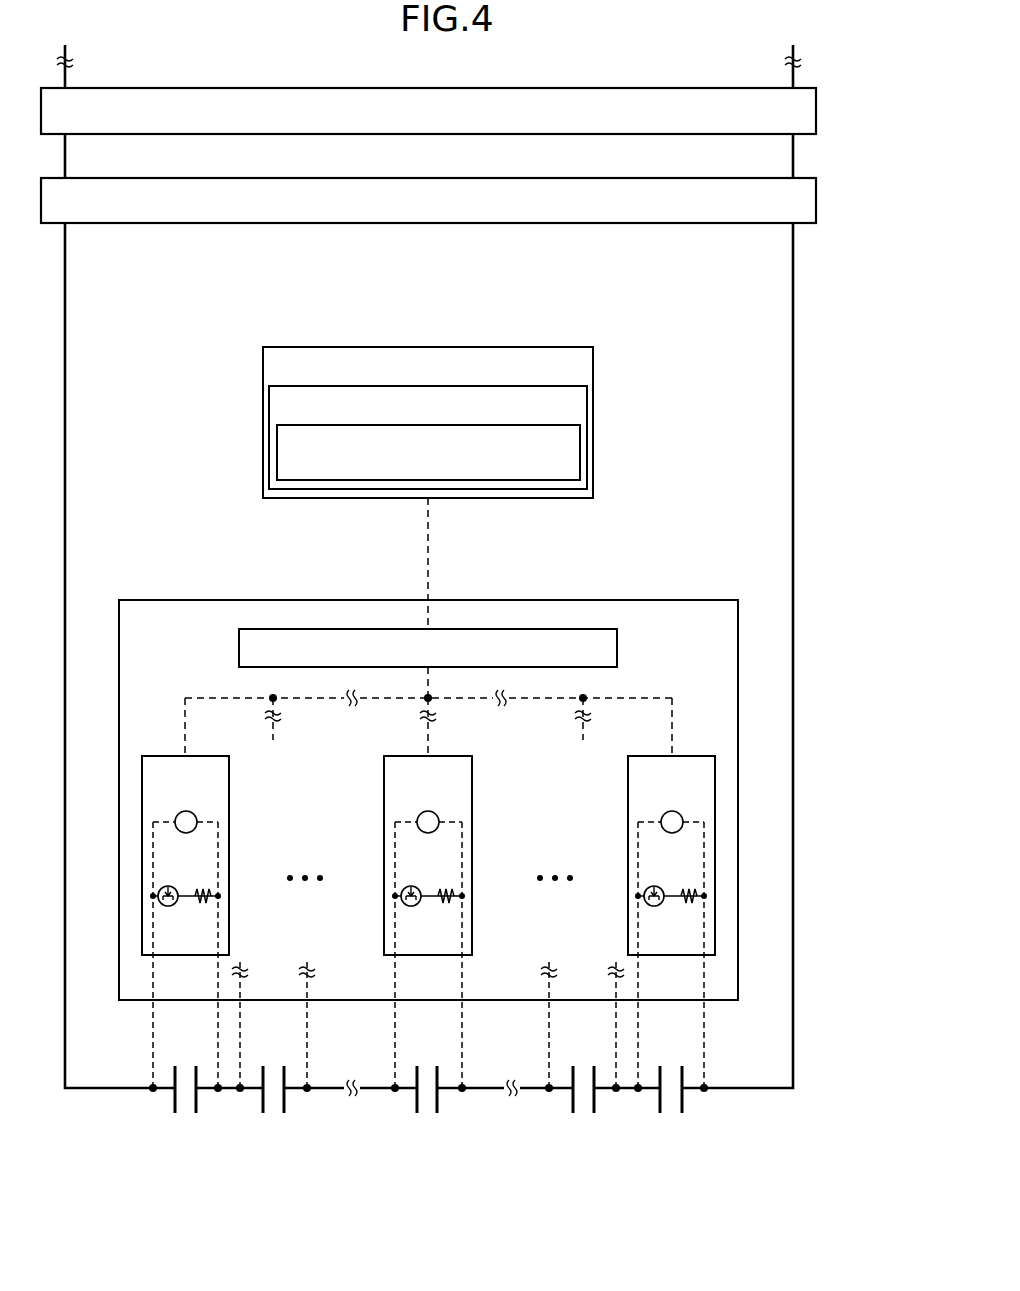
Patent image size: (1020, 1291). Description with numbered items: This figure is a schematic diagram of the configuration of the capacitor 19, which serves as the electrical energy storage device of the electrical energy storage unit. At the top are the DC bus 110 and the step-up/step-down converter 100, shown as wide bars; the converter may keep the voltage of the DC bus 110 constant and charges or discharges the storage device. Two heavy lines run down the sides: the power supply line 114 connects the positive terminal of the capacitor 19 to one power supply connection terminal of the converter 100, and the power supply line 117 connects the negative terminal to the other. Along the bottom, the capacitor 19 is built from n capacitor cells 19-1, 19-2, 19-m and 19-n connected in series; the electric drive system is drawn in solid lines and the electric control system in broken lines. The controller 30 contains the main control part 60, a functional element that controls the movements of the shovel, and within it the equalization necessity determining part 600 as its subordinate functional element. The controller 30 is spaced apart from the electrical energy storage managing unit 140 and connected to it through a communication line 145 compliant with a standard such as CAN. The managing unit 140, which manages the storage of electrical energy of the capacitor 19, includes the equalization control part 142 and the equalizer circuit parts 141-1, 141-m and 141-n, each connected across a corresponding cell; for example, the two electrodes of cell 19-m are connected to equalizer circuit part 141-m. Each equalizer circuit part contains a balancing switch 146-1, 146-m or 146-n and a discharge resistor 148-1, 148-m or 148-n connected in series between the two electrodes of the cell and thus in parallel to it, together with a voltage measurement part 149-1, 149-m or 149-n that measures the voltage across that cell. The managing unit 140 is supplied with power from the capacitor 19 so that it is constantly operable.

The DC bus 110 is at (806, 88).
The step-up/step-down converter 100 is at (806, 178).
The controller 30 is at (263, 347).
The main control part 60 is at (269, 386).
The equalization necessity determining part 600 is at (520, 425).
The communication line 145 is at (432, 545).
The electrical energy storage managing unit 140 is at (697, 600).
The equalization control part 142 is at (476, 629).
The equalizer circuit part 141-1 is at (198, 756).
The equalizer circuit part 141-m is at (440, 756).
The equalizer circuit part 141-n is at (684, 756).
The voltage measurement part 149-1 is at (184, 811).
The voltage measurement part 149-m is at (426, 811).
The voltage measurement part 149-n is at (670, 811).
The discharge resistor 148-1 is at (195, 888).
The discharge resistor 148-m is at (438, 888).
The discharge resistor 148-n is at (681, 888).
The balancing switch 146-1 is at (170, 906).
The balancing switch 146-m is at (413, 906).
The balancing switch 146-n is at (656, 906).
The power supply line 114 is at (66, 863).
The power supply line 117 is at (795, 868).
The capacitor cell 19-1 is at (173, 1113).
The capacitor cell 19-2 is at (261, 1113).
The capacitor cell 19-m is at (415, 1113).
The capacitor cell 19-n is at (653, 1112).
The capacitor 19 is at (422, 1136).